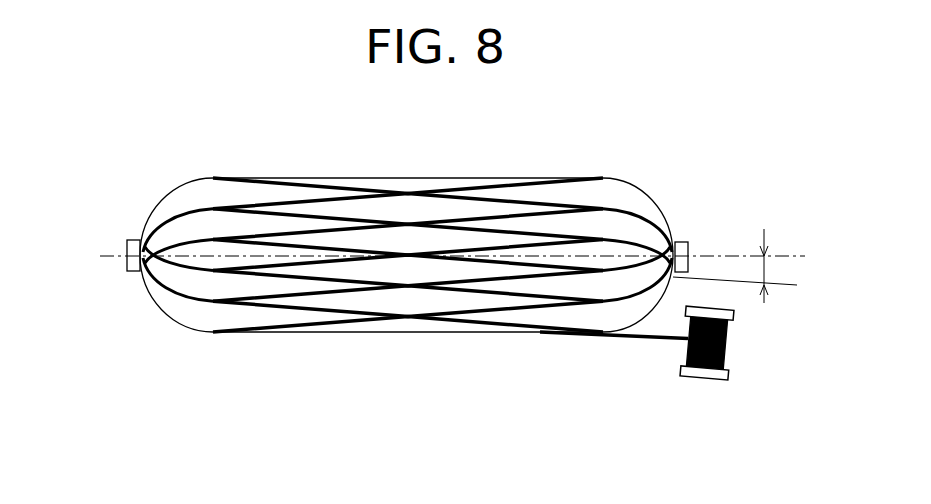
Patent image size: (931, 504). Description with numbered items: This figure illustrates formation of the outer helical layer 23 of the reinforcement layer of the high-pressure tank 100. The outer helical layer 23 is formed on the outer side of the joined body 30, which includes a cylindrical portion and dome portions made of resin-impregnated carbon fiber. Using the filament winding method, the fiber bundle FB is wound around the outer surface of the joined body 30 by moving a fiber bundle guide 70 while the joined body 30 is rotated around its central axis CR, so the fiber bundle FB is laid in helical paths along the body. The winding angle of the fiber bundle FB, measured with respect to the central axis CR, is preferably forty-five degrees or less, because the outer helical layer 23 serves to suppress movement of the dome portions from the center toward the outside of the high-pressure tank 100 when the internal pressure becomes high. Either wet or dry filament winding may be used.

The high-pressure tank 100 is at (676, 131).
The joined body 30 is at (190, 322).
The outer helical layer 23 is at (396, 183).
The fiber bundle guide 70 is at (722, 378).
The fiber bundle FB is at (641, 340).
The central axis CR is at (473, 260).